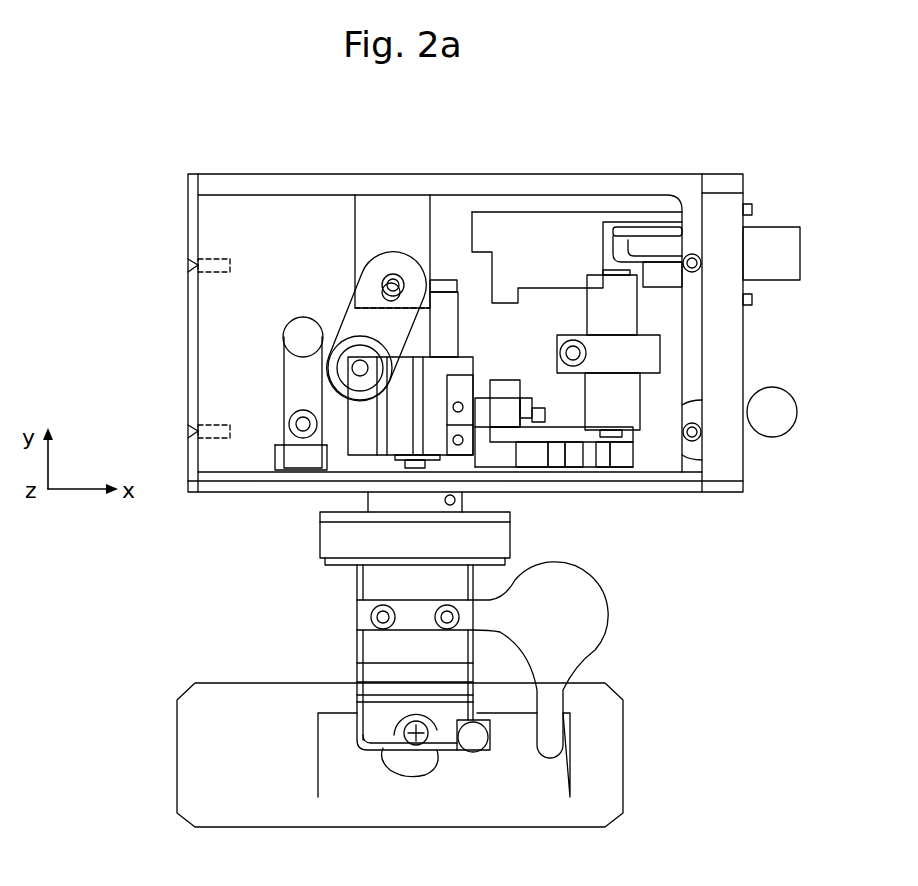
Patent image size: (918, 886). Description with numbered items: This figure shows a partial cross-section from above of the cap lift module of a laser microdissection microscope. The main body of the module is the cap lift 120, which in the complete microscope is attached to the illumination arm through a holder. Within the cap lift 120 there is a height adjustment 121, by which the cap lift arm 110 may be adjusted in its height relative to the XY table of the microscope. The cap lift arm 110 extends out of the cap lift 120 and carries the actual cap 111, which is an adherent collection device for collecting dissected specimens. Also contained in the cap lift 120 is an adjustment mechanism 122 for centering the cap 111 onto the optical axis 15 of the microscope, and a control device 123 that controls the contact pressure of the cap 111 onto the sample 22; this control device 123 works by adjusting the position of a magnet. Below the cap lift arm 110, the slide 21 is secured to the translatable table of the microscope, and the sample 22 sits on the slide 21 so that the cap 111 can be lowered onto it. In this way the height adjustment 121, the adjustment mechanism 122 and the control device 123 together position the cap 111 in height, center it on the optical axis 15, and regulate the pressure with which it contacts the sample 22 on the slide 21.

The cap lift 120 is at (466, 185).
The height adjustment 121 is at (535, 457).
The adjustment mechanism 122 is at (341, 381).
The control device 123 is at (299, 341).
The cap lift arm 110 is at (392, 653).
The cap 111 is at (450, 752).
The optical axis 15 is at (410, 748).
The sample 22 is at (420, 770).
The slide 21 is at (263, 795).